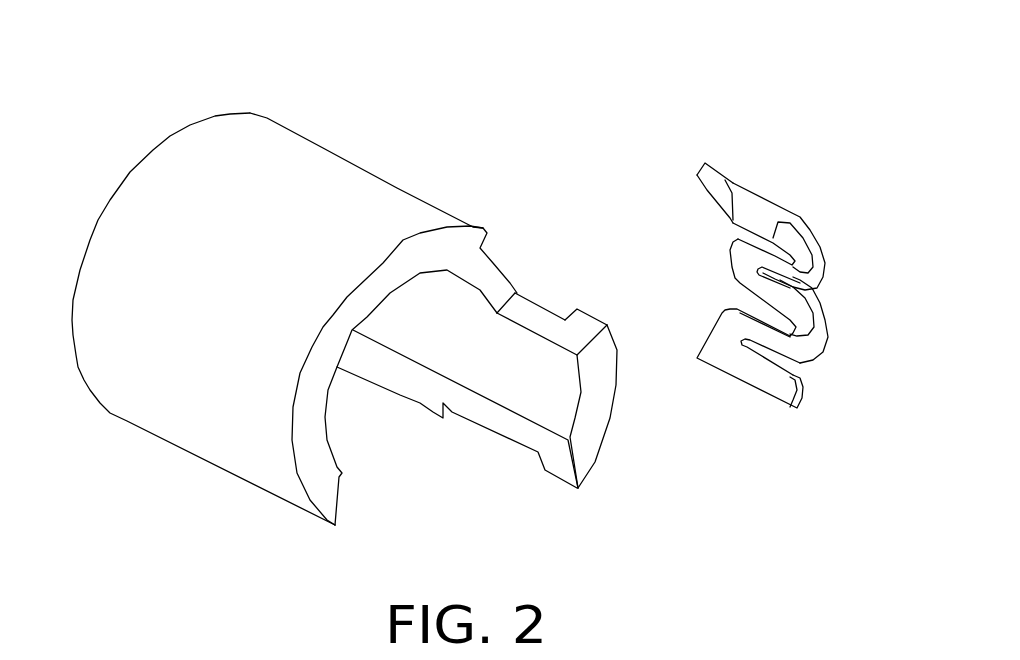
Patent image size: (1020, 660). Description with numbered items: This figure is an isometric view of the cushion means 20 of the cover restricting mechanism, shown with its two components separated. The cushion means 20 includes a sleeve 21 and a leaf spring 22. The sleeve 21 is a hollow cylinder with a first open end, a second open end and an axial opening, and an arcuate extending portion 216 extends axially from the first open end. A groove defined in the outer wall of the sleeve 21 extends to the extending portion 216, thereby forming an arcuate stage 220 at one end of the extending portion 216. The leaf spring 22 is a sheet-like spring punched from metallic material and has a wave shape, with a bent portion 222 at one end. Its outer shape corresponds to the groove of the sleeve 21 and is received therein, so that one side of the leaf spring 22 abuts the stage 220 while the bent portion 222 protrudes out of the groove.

The cushion means 20 is at (500, 44).
The sleeve 21 is at (307, 207).
The arcuate extending portion 216 is at (590, 420).
The arcuate stage 220 is at (598, 318).
The leaf spring 22 is at (807, 267).
The bent portion 222 is at (760, 210).